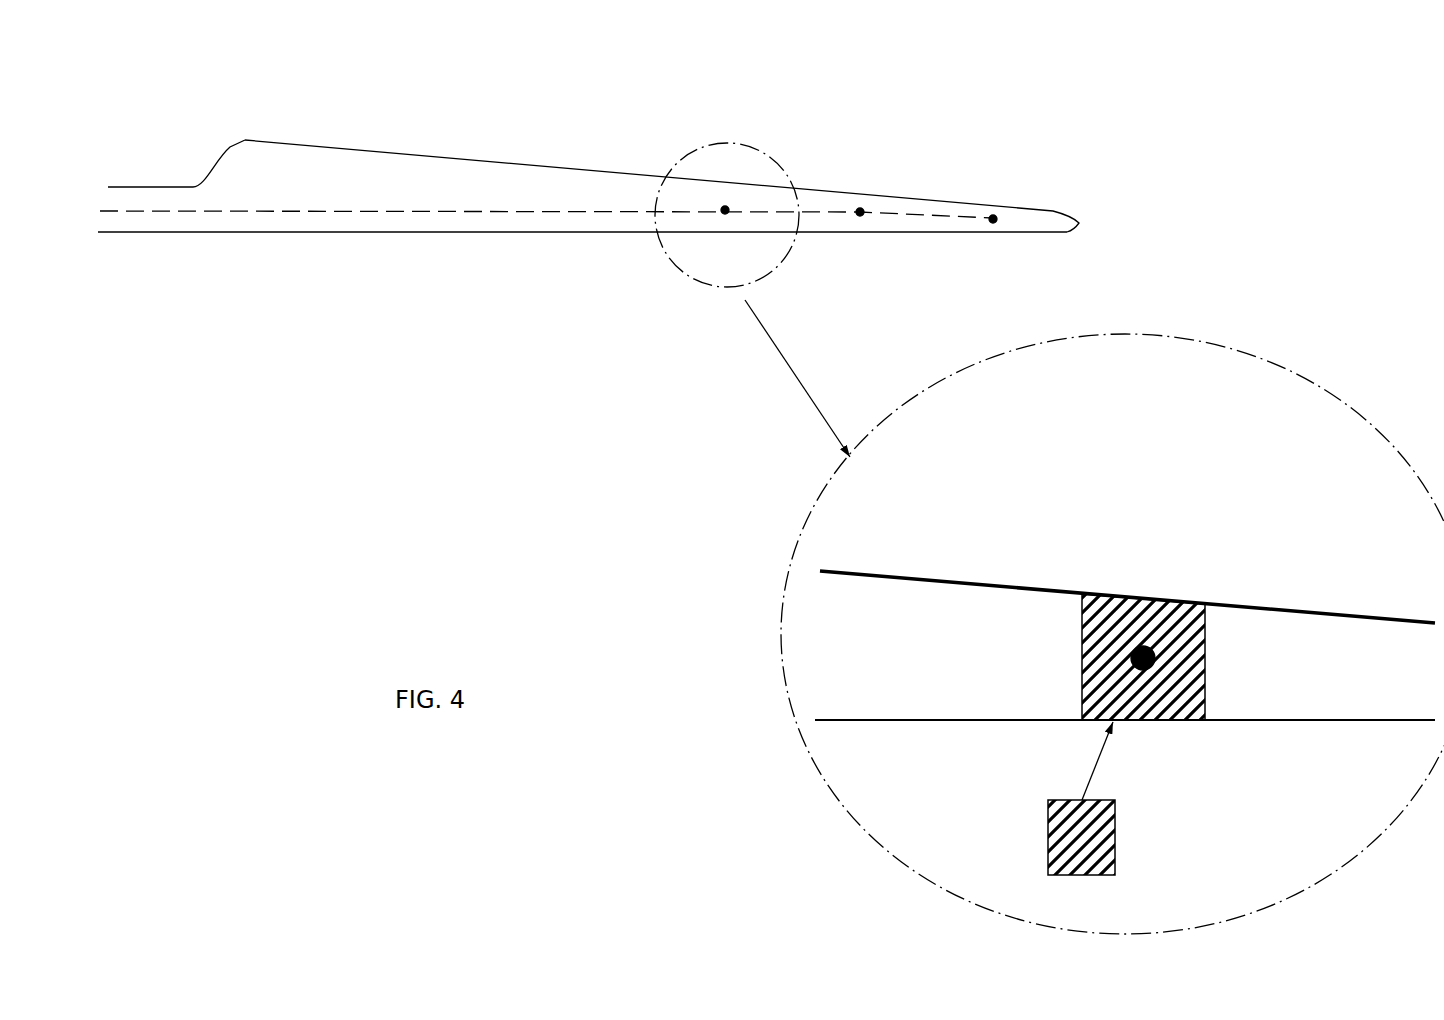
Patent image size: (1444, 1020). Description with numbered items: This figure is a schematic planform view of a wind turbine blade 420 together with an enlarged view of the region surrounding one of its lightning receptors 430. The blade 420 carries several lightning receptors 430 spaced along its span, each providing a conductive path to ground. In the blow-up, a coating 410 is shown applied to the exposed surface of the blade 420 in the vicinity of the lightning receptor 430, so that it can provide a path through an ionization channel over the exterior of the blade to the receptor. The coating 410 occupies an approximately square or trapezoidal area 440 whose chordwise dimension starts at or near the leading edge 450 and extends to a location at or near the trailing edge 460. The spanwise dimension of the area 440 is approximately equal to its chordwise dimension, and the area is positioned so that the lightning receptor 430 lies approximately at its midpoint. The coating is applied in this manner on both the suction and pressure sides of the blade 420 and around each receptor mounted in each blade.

The coating 410 is at (1117, 838).
The blade 420 is at (295, 168).
The lightning receptor 430 is at (729, 207).
The area 440 is at (1207, 603).
The leading edge 450 is at (542, 232).
The trailing edge 460 is at (523, 162).